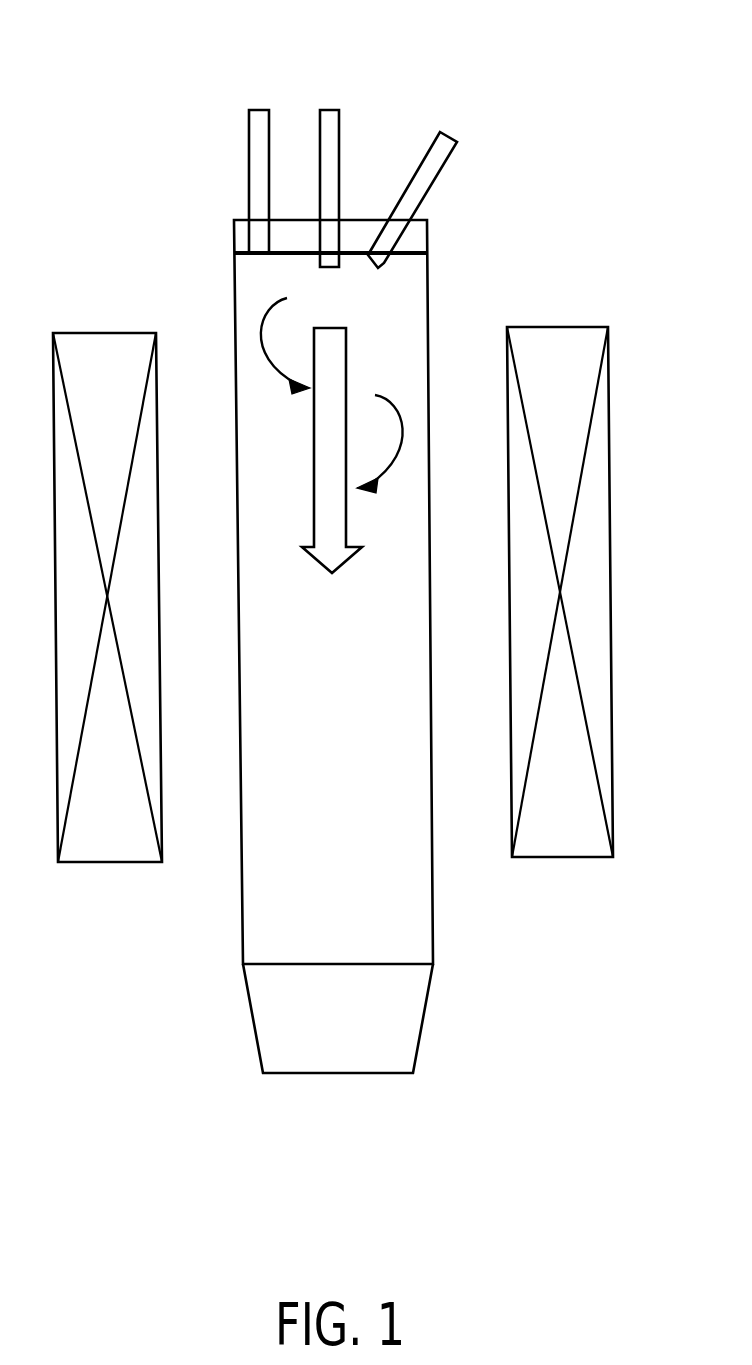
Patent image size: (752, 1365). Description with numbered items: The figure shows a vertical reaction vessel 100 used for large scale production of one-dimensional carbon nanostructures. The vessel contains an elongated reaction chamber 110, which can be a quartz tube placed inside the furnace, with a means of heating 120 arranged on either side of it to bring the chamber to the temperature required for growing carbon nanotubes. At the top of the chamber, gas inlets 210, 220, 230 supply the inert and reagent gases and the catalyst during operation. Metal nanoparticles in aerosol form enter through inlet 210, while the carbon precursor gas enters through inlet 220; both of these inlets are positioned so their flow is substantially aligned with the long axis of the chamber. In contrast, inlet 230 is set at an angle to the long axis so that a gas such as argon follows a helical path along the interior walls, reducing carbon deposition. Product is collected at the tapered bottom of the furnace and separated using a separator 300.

The vertical reaction vessel 100 is at (333, 599).
The reaction chamber 110 is at (337, 782).
The means of heating 120 is at (562, 358).
The gas inlet 210 is at (263, 108).
The gas inlet 220 is at (331, 107).
The gas inlet 230 is at (455, 138).
The separator 300 is at (387, 1020).